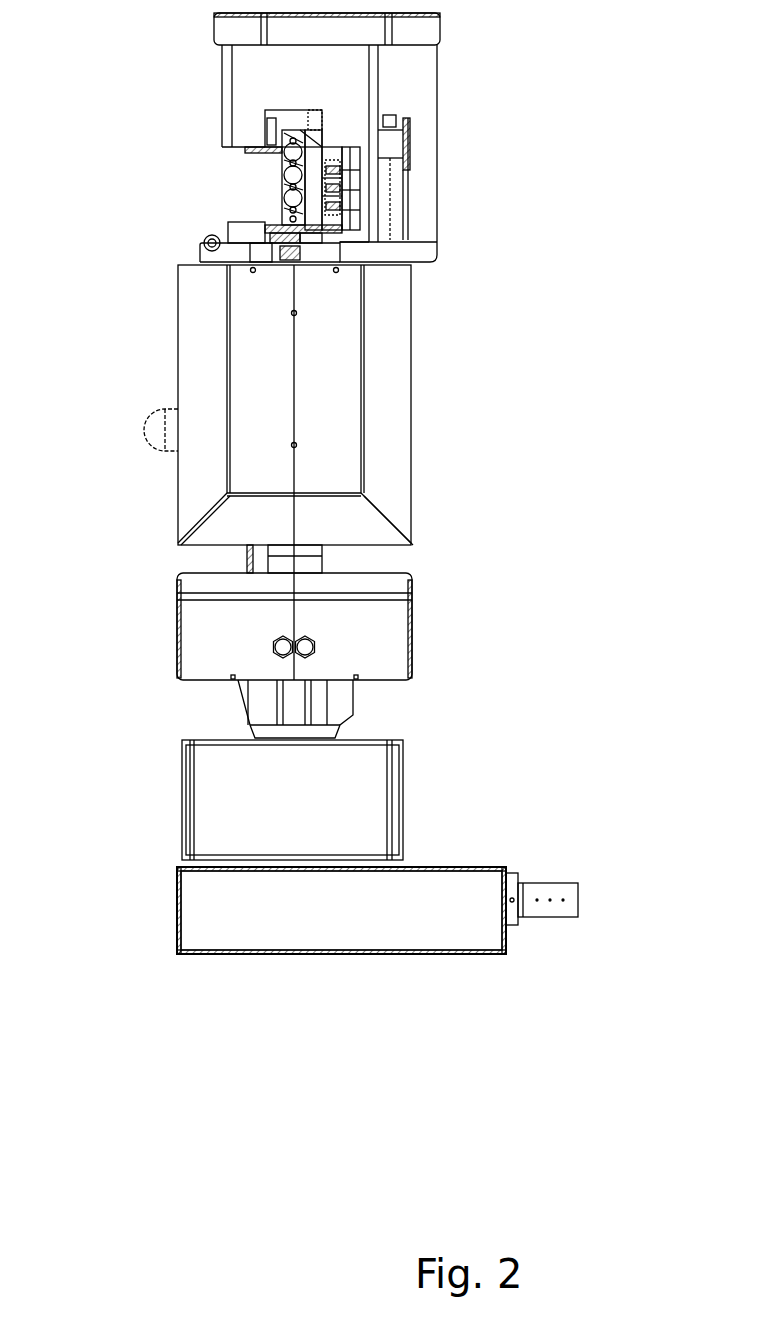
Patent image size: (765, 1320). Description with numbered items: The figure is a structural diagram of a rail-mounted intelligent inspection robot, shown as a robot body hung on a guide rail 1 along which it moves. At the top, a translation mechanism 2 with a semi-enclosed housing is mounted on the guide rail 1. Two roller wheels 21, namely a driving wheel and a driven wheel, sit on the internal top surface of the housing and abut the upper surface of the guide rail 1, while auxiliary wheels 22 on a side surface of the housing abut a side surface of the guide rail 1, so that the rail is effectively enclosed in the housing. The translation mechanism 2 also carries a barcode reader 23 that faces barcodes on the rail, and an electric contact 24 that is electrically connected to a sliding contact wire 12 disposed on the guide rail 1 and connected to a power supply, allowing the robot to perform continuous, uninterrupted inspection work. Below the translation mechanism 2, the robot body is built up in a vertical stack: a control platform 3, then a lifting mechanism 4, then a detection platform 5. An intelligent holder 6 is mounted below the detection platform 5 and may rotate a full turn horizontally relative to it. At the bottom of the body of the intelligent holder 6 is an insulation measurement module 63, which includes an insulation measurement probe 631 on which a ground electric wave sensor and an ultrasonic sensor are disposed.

The guide rail 1 is at (283, 180).
The translation mechanism 2 is at (248, 68).
The roller wheels 21 is at (292, 117).
The auxiliary wheels 22 is at (252, 153).
The barcode reader 23 is at (395, 143).
The electric contact 24 is at (343, 188).
The sliding contact wire 12 is at (348, 210).
The control platform 3 is at (388, 352).
The lifting mechanism 4 is at (322, 556).
The detection platform 5 is at (372, 645).
The intelligent holder 6 is at (360, 772).
The insulation measurement module 63 is at (200, 908).
The insulation measurement probe 631 is at (543, 893).